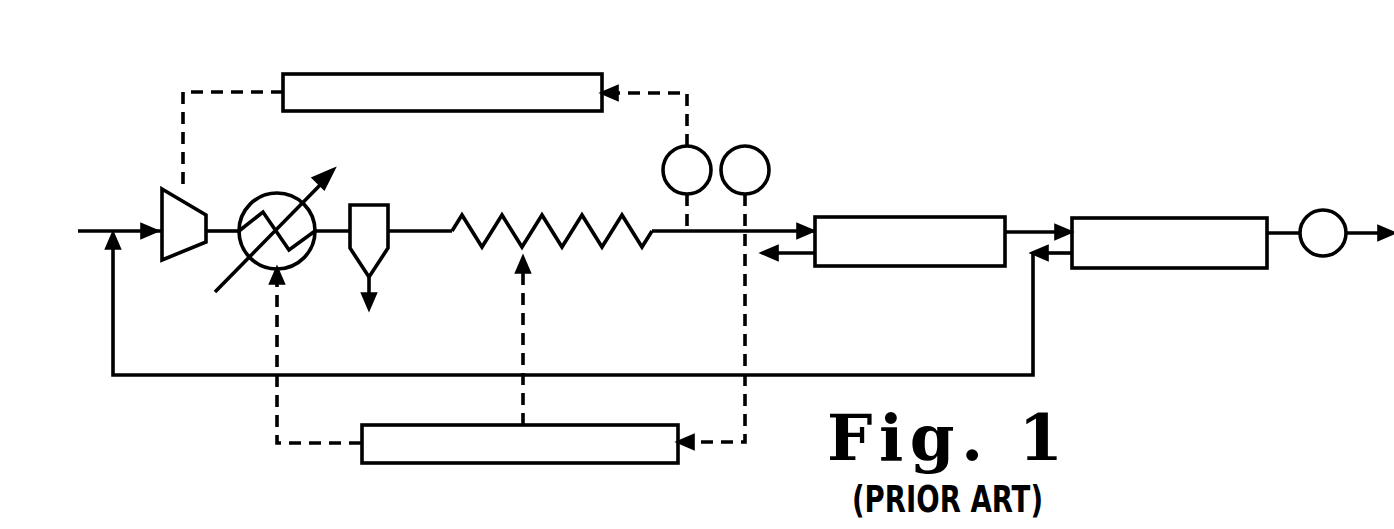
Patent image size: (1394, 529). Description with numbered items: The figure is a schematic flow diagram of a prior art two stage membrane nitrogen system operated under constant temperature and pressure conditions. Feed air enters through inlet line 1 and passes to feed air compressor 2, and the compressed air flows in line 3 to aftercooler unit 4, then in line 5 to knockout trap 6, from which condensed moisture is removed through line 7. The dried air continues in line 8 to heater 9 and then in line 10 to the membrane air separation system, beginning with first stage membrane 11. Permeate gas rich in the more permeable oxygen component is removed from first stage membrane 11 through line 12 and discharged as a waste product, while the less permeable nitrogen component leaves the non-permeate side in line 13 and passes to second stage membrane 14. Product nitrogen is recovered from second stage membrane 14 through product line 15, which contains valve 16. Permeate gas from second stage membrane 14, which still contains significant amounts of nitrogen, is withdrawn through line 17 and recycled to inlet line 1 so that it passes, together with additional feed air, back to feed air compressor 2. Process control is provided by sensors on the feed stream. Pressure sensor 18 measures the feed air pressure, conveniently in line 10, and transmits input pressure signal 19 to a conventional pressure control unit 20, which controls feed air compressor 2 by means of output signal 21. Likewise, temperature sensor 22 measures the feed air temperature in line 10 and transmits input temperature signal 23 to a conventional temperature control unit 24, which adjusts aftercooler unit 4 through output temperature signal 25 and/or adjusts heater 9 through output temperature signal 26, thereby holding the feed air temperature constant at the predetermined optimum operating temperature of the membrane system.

The inlet line 1 is at (108, 228).
The feed air compressor 2 is at (163, 194).
The line 3 is at (223, 227).
The aftercooler unit 4 is at (256, 196).
The line 5 is at (334, 226).
The knockout trap 6 is at (378, 204).
The line 7 is at (370, 284).
The line 8 is at (431, 227).
The heater 9 is at (573, 216).
The line 10 is at (700, 236).
The first stage membrane 11 is at (937, 216).
The line 12 is at (797, 254).
The line 13 is at (1034, 231).
The second stage membrane 14 is at (1213, 217).
The product line 15 is at (1362, 231).
The valve 16 is at (1308, 212).
The line 17 is at (931, 375).
The pressure sensor 18 is at (700, 147).
The input pressure signal 19 is at (631, 92).
The pressure control unit 20 is at (305, 74).
The output signal 21 is at (183, 163).
The temperature sensor 22 is at (764, 163).
The input temperature signal 23 is at (744, 403).
The temperature control unit 24 is at (477, 425).
The output temperature signal 25 is at (277, 298).
The output temperature signal 26 is at (523, 302).